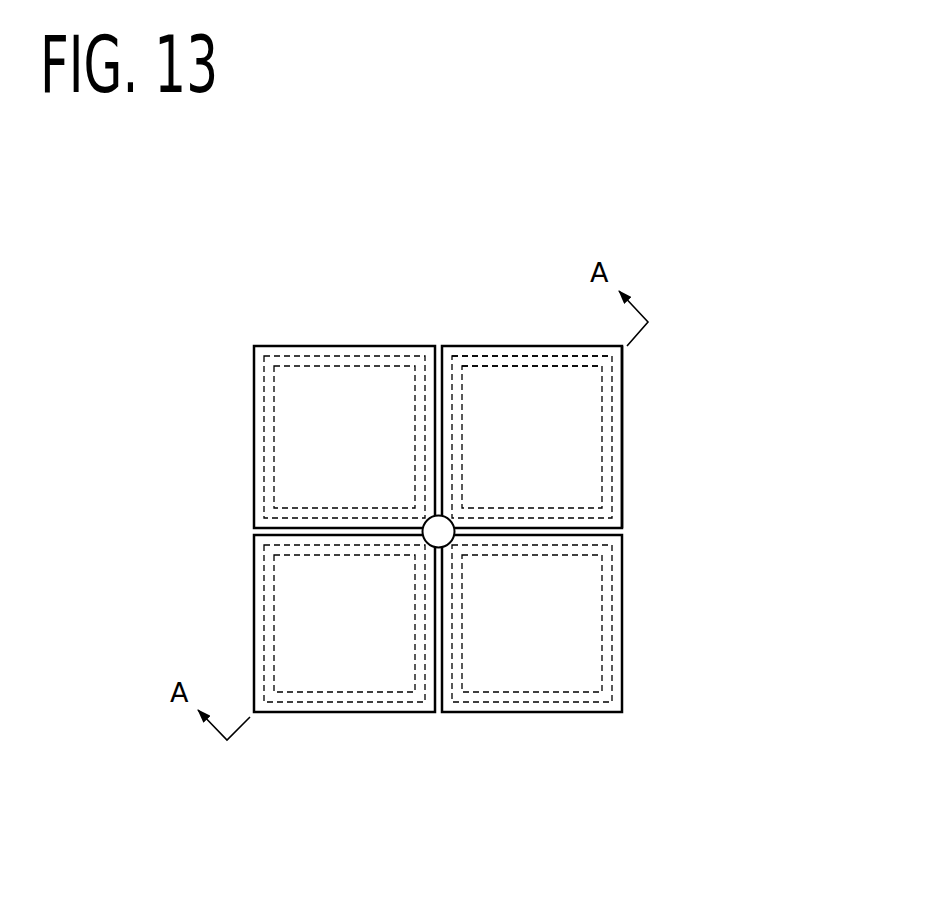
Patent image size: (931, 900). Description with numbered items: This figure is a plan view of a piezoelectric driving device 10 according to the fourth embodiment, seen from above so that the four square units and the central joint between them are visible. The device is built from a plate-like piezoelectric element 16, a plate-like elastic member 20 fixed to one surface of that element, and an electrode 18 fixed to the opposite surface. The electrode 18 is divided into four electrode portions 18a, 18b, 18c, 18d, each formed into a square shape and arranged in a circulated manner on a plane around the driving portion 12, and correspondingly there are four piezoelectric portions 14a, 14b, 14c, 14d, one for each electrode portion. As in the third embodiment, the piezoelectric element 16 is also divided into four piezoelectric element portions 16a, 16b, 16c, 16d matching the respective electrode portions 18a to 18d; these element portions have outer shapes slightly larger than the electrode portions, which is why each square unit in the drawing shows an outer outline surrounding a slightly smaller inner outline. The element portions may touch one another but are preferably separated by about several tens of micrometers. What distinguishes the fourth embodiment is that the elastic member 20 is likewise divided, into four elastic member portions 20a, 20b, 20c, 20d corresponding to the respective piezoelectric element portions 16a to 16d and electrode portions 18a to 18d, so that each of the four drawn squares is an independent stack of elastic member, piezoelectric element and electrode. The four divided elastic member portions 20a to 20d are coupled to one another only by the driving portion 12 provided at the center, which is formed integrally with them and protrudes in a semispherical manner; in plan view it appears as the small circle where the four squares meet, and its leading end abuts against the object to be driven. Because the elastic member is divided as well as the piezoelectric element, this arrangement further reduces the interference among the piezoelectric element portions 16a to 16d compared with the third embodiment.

The piezoelectric driving device 10 is at (539, 251).
The driving portion 12 is at (441, 516).
The piezoelectric portion 14a is at (614, 408).
The piezoelectric portion 14b is at (580, 666).
The piezoelectric portion 14c is at (300, 666).
The piezoelectric portion 14d is at (301, 388).
The piezoelectric element 16 is at (469, 354).
The piezoelectric element portion 16a is at (611, 478).
The piezoelectric element portion 16b is at (612, 592).
The piezoelectric element portion 16c is at (264, 571).
The piezoelectric element portion 16d is at (263, 410).
The electrode 18 is at (530, 352).
The electrode portion 18a is at (577, 413).
The electrode portion 18b is at (503, 672).
The electrode portion 18c is at (328, 672).
The electrode portion 18d is at (306, 380).
The elastic member 20 is at (625, 512).
The elastic member portion 20a is at (623, 444).
The elastic member portion 20b is at (622, 658).
The elastic member portion 20c is at (254, 623).
The elastic member portion 20d is at (254, 463).